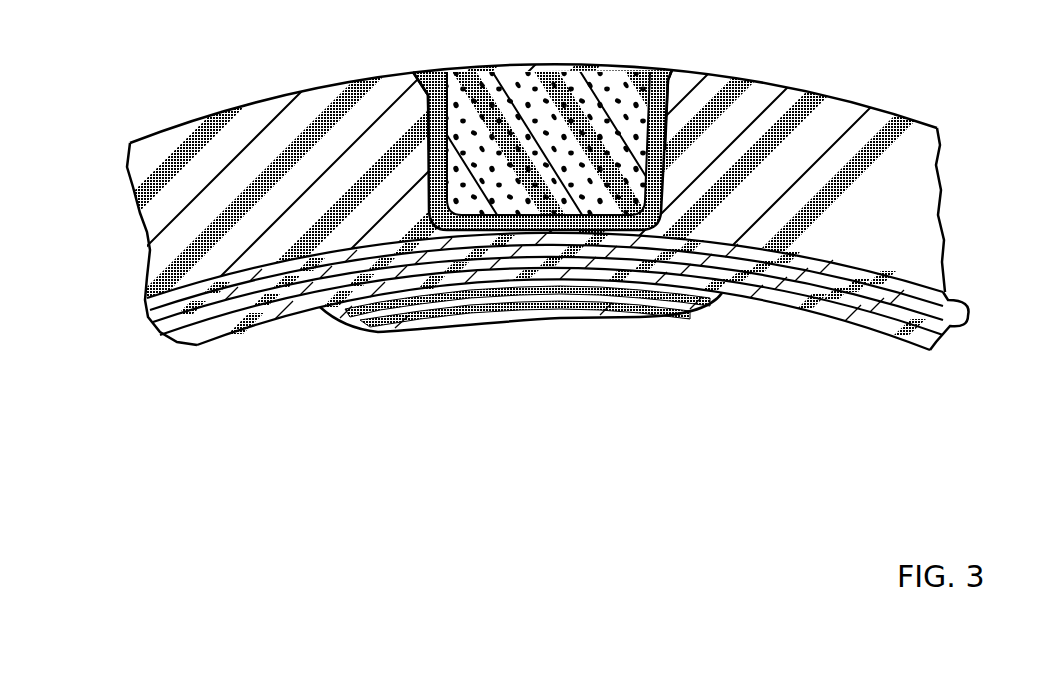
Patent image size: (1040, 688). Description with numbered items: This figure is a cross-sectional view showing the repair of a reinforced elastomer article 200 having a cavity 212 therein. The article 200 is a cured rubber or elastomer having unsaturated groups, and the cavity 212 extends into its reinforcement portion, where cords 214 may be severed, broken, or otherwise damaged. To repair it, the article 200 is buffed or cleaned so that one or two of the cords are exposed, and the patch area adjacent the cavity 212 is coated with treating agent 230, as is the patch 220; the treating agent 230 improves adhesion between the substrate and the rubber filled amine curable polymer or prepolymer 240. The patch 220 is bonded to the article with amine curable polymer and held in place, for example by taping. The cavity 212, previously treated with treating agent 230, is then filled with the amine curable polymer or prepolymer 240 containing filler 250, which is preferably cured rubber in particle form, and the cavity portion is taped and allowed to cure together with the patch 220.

The article 200 is at (797, 85).
The cavity 212 is at (437, 68).
The cords 214 is at (970, 323).
The patch 220 is at (621, 306).
The treating agent 230 is at (463, 72).
The rubber filled amine curable polymer or prepolymer 240 is at (583, 48).
The filler 250 is at (522, 110).